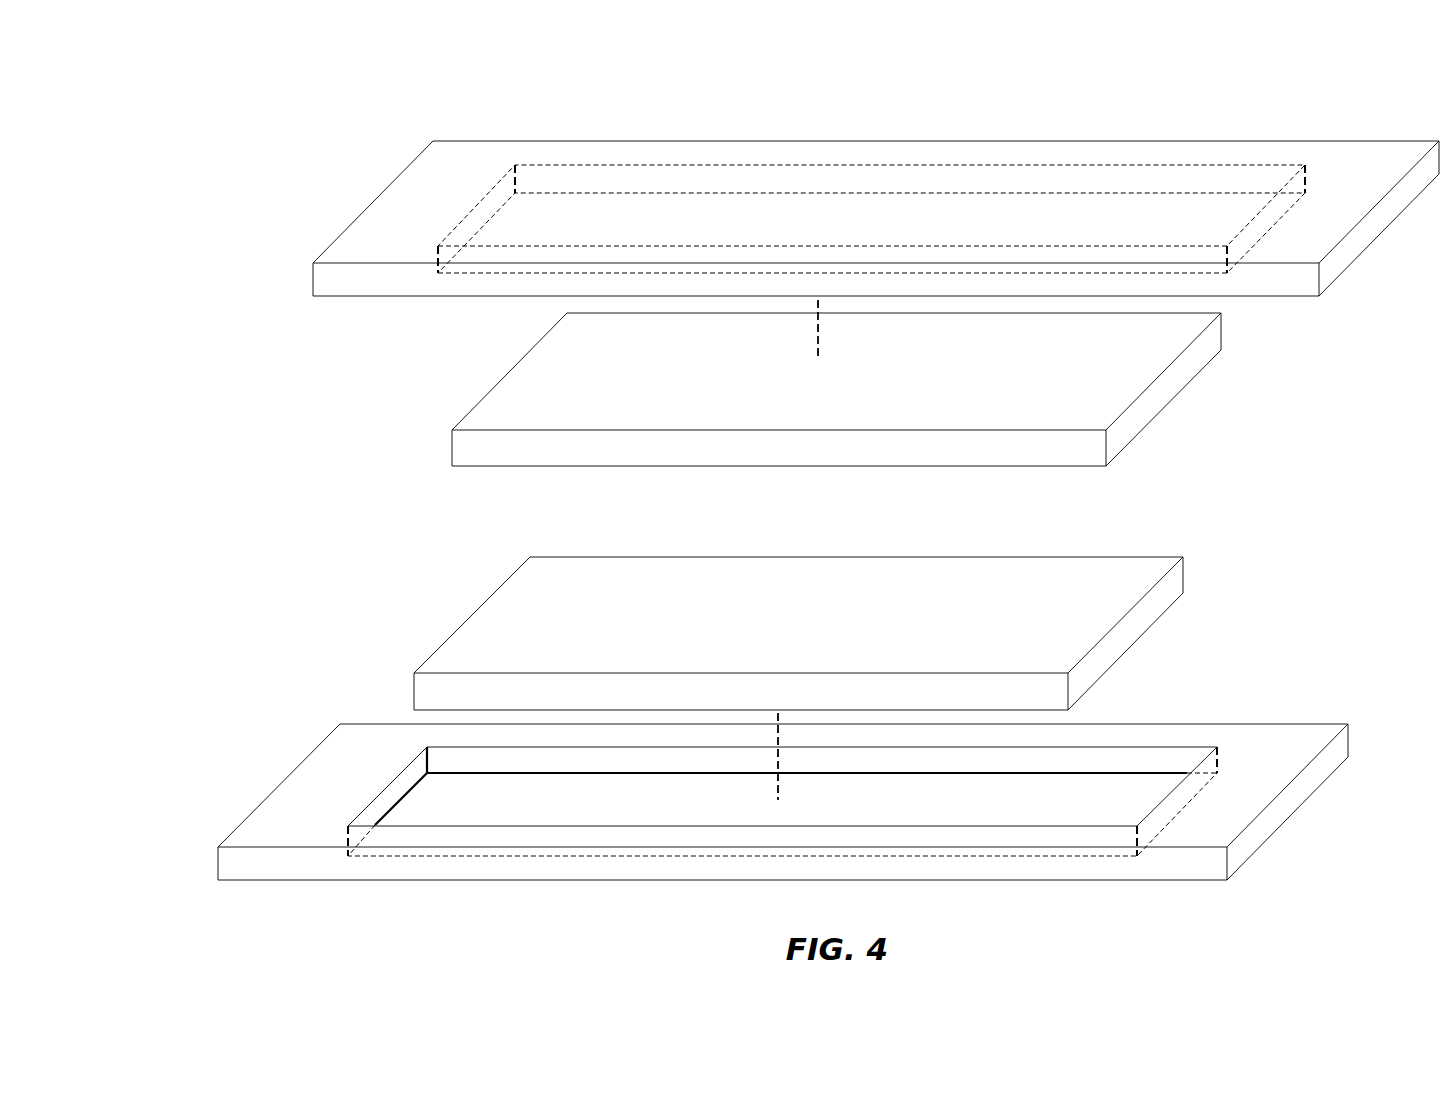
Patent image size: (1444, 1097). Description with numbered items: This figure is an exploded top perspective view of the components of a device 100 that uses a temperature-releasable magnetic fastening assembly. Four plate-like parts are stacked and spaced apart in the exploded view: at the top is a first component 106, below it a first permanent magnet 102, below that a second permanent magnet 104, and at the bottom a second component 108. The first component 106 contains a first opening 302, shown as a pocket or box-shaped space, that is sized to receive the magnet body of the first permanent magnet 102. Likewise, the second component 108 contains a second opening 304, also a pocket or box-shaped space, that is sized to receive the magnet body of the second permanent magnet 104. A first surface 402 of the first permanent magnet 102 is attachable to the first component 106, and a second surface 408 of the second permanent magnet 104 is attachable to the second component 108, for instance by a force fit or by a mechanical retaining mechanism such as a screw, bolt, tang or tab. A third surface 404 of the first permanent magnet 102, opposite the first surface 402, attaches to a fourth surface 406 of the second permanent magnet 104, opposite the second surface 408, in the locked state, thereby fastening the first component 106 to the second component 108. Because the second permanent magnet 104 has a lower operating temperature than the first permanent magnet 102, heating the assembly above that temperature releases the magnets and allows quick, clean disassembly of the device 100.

The device 100 is at (233, 120).
The first permanent magnet 102 is at (482, 400).
The second permanent magnet 104 is at (477, 615).
The first component 106 is at (313, 279).
The second component 108 is at (308, 765).
The first opening 302 is at (585, 208).
The second opening 304 is at (495, 785).
The first surface 402 is at (917, 371).
The third surface 404 is at (840, 475).
The fourth surface 406 is at (1098, 583).
The second surface 408 is at (1152, 650).